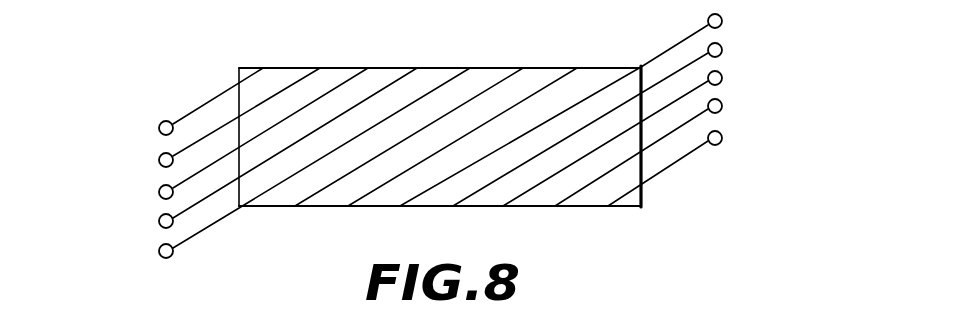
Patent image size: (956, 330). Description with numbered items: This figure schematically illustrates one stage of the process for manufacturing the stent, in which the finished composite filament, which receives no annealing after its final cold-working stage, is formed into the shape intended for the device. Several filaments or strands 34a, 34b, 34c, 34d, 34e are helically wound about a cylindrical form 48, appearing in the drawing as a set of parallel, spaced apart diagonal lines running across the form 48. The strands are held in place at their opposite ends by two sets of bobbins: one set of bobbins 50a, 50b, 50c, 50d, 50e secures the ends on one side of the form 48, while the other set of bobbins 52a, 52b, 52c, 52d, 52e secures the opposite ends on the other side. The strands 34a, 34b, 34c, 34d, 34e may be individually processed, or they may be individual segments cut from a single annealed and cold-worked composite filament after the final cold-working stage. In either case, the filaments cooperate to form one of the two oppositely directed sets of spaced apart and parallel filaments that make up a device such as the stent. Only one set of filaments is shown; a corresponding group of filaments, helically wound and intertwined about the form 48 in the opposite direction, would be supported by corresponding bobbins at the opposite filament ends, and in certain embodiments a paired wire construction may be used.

The filament 34a is at (197, 109).
The filament 34b is at (312, 72).
The filament 34c is at (278, 126).
The filament 34d is at (585, 189).
The filament 34e is at (677, 163).
The cylindrical form 48 is at (488, 80).
The bobbin 50a is at (158, 128).
The bobbin 50b is at (158, 160).
The bobbin 50c is at (158, 192).
The bobbin 50d is at (158, 221).
The bobbin 50e is at (158, 251).
The bobbin 52a is at (723, 21).
The bobbin 52b is at (723, 50).
The bobbin 52c is at (723, 78).
The bobbin 52d is at (723, 106).
The bobbin 52e is at (723, 138).